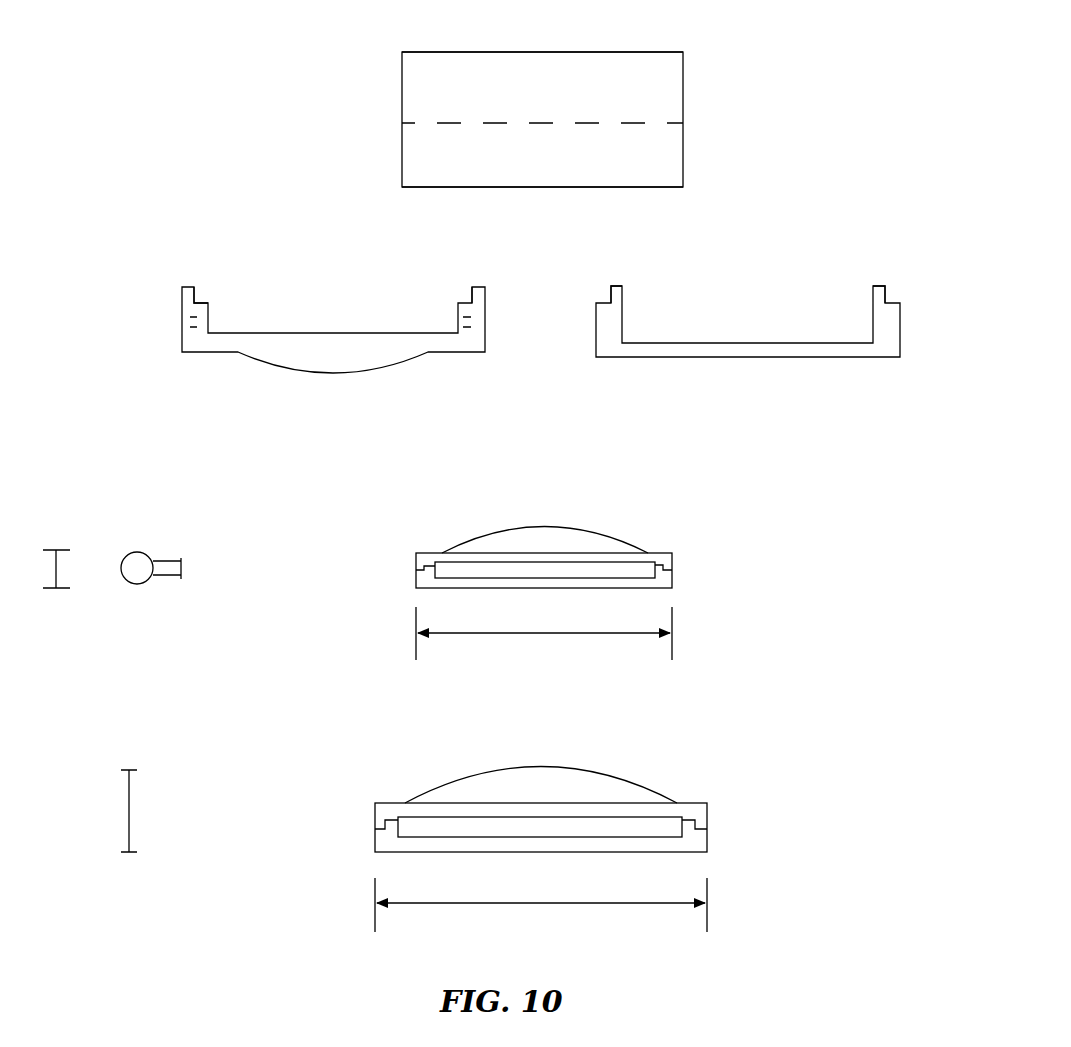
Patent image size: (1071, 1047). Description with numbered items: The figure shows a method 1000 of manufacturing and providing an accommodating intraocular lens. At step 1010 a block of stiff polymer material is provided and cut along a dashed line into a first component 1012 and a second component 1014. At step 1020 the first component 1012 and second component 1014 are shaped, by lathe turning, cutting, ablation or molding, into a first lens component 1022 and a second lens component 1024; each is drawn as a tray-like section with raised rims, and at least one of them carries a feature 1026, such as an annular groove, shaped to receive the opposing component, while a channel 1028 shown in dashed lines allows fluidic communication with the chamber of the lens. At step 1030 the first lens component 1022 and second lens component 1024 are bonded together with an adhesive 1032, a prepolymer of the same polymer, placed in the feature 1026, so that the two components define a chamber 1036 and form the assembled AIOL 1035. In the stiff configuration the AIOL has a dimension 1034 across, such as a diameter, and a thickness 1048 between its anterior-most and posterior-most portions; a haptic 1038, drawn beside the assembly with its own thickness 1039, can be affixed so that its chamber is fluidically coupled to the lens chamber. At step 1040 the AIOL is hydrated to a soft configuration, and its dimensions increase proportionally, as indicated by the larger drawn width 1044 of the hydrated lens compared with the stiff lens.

The method 1000 is at (135, 97).
The step 1010 is at (735, 121).
The first component 1012 is at (410, 80).
The second component 1014 is at (410, 158).
The step 1020 is at (838, 262).
The first lens component 1022 is at (228, 262).
The second lens component 1024 is at (730, 268).
The feature 1026 is at (462, 300).
The channel 1028 is at (185, 318).
The step 1030 is at (802, 542).
The adhesive 1032 is at (668, 568).
The dimension 1034 is at (520, 633).
The AIOL 1035 is at (470, 494).
The chamber 1036 is at (445, 572).
The haptic 1038 is at (130, 552).
The thickness 1039 is at (58, 560).
The step 1040 is at (812, 762).
The second width dimension 1044 is at (480, 905).
The thickness 1048 is at (131, 808).